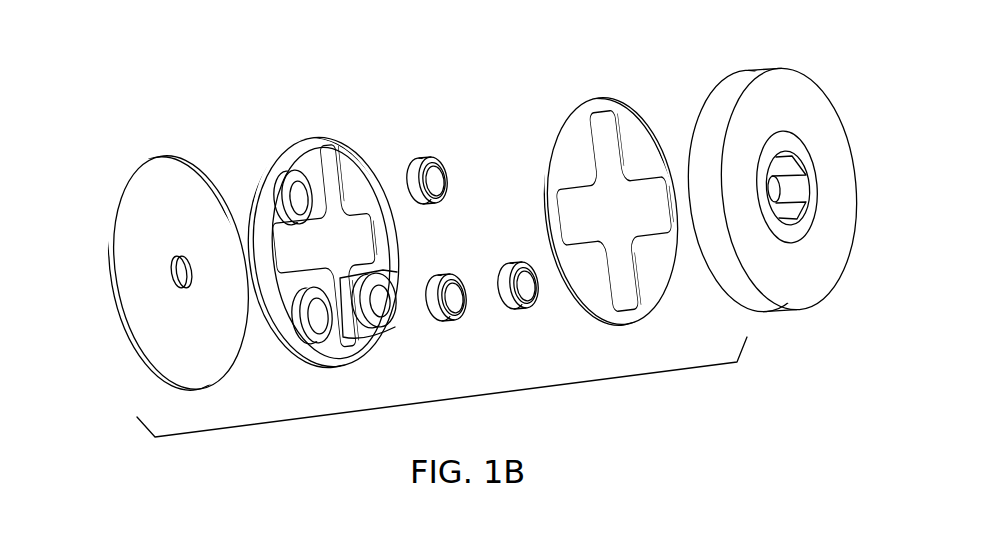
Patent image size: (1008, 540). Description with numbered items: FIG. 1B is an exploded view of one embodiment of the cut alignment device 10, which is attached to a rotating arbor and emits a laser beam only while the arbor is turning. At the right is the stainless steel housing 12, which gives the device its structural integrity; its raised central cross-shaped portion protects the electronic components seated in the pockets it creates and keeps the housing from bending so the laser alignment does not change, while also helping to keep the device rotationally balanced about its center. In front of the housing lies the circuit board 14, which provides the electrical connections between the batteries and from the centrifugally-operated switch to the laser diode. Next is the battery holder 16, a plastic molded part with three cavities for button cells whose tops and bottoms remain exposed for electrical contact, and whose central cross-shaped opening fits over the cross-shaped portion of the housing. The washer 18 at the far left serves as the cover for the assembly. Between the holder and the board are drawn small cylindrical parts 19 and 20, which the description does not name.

The device 10 is at (97, 197).
The stainless steel housing 12 is at (797, 128).
The circuit board 14 is at (570, 148).
The battery holder 16 is at (281, 160).
The washer 18 is at (176, 182).
The bushing 19 is at (412, 163).
The bushing 20 is at (508, 297).